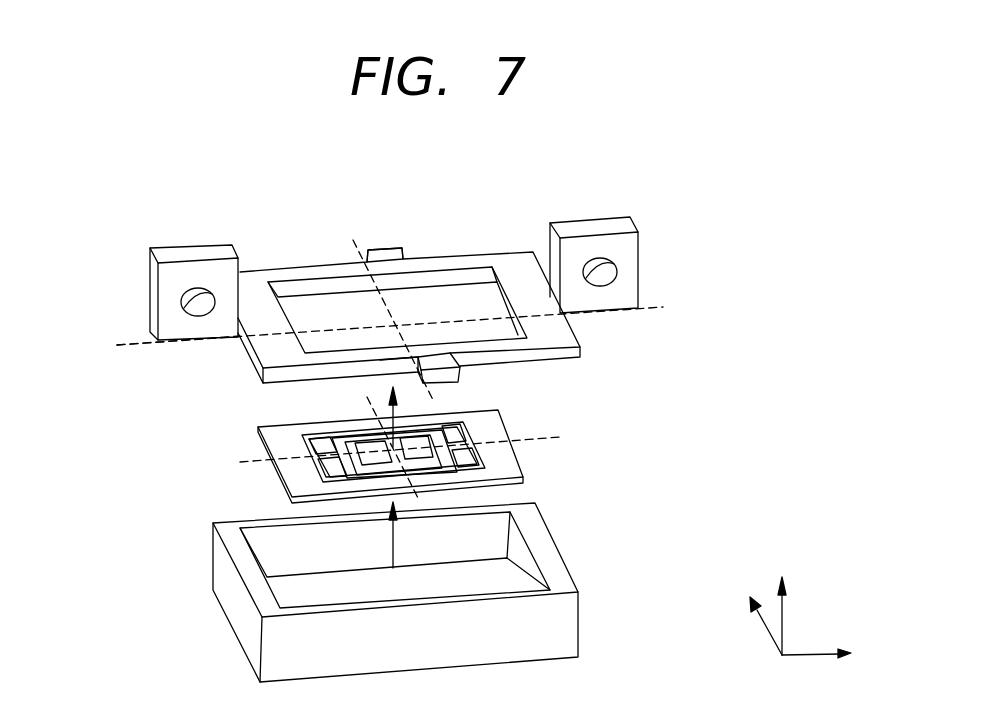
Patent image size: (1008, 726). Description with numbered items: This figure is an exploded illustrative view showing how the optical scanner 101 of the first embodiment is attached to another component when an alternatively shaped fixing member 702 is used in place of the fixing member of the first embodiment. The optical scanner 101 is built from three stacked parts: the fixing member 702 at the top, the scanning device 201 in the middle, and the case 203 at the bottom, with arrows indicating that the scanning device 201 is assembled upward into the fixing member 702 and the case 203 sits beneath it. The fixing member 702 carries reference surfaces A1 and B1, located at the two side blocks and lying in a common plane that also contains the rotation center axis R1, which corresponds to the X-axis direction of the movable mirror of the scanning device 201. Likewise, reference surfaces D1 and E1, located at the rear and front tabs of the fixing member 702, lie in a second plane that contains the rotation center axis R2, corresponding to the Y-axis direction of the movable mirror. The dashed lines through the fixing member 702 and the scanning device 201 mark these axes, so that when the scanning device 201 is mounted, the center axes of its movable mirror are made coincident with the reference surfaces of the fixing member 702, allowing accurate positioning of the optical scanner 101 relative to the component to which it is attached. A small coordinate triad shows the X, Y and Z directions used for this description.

The optical scanner 101 is at (652, 178).
The fixing member 702 is at (553, 333).
The scanning device 201 is at (505, 453).
The case 203 is at (553, 570).
The reference surface A1 is at (625, 290).
The reference surface B1 is at (183, 340).
The reference surface D1 is at (366, 260).
The reference surface E1 is at (417, 362).
The rotation center axis R1 is at (257, 462).
The rotation center axis R2 is at (418, 498).